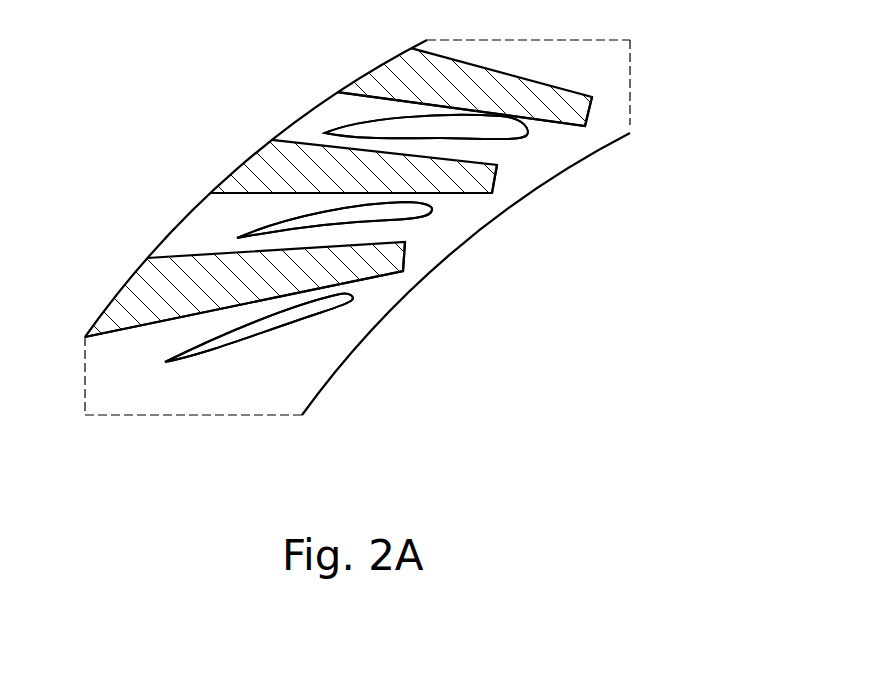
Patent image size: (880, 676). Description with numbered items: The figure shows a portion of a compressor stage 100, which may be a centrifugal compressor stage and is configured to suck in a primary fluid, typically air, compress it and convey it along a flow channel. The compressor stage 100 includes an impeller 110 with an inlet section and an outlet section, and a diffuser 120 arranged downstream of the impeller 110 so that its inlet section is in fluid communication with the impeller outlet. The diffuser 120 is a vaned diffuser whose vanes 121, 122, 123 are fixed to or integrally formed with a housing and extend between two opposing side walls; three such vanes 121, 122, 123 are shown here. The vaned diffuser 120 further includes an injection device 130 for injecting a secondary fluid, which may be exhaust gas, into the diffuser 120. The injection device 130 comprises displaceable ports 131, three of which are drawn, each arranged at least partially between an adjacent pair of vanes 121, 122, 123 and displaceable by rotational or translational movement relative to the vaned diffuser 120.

The compressor stage 100 is at (113, 105).
The impeller 110 is at (510, 372).
The diffuser 120 is at (228, 373).
The vane 121 is at (298, 325).
The vane 122 is at (434, 212).
The vane 123 is at (527, 135).
The injection device 130 is at (588, 105).
The displaceable port 131 is at (587, 126).